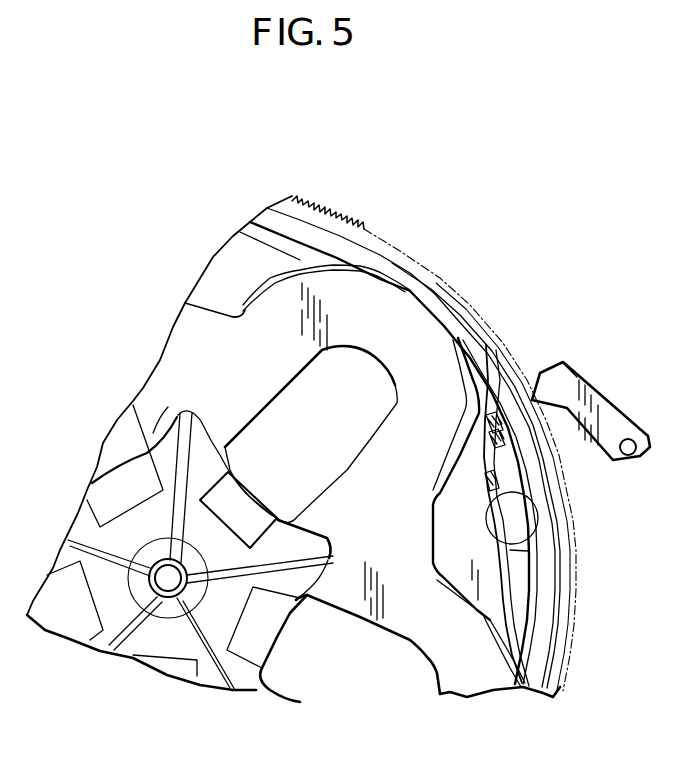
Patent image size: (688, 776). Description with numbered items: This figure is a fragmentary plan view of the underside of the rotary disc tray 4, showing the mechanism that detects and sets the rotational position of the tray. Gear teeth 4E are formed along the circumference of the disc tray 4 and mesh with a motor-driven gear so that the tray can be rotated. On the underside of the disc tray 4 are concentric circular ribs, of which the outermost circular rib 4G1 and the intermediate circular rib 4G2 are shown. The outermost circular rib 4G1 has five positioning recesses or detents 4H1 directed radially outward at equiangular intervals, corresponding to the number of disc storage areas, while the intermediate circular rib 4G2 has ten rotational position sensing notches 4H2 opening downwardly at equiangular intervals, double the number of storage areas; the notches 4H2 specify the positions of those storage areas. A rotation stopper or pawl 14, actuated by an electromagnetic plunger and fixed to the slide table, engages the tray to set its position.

The rotary disc tray 4 is at (90, 532).
The gear teeth 4E is at (323, 196).
The outermost circular rib 4G1 is at (543, 477).
The intermediate circular rib 4G2 is at (533, 562).
The positioning recesses 4H1 is at (525, 410).
The rotational position sensing notches 4H2 is at (498, 417).
The rotation stopper 14 is at (567, 367).